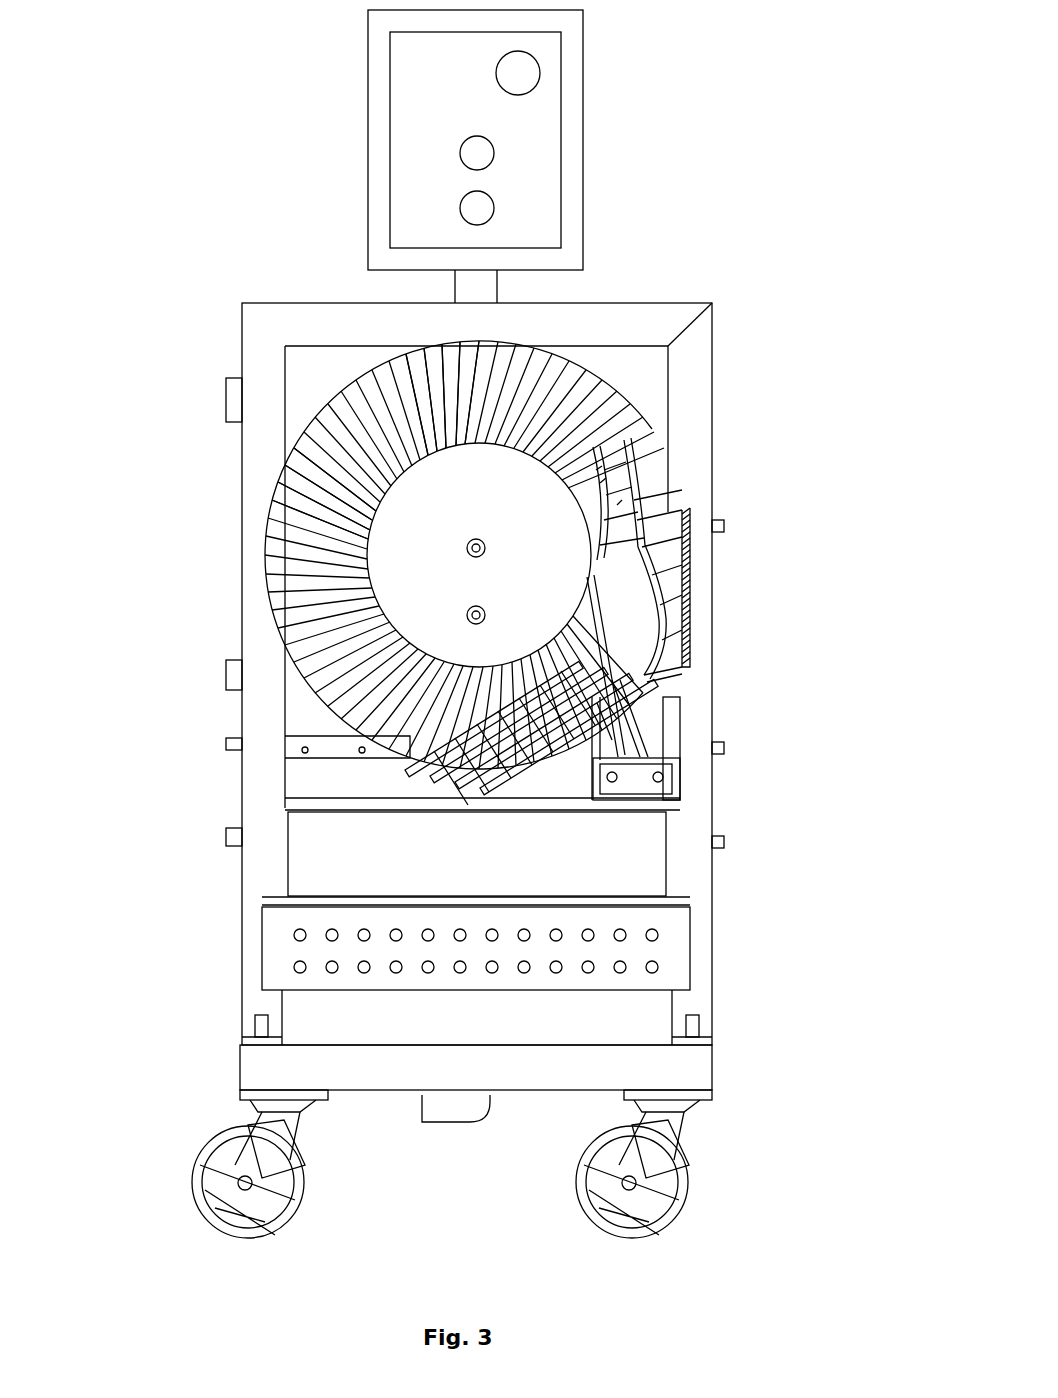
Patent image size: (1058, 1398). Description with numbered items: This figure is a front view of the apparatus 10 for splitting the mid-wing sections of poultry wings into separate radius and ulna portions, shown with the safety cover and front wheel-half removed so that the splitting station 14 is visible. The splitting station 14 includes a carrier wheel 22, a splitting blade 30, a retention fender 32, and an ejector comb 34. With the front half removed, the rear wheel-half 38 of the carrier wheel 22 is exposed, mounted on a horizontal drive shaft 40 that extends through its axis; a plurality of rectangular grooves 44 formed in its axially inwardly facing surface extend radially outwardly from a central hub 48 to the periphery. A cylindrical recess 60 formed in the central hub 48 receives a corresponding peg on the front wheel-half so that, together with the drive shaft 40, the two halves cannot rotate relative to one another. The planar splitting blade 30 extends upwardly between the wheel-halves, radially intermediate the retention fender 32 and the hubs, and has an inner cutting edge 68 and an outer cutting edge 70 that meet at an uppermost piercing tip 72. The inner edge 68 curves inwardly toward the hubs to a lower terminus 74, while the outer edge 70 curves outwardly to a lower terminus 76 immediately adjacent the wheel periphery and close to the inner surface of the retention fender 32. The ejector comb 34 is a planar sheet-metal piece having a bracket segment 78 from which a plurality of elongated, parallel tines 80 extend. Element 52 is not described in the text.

The apparatus 10 is at (841, 146).
The splitting station 14 is at (673, 490).
The carrier wheel 22 is at (282, 613).
The splitting blade 30 is at (622, 612).
The retention fender 32 is at (688, 580).
The ejector comb 34 is at (607, 693).
The rear wheel-half 38 is at (300, 512).
The horizontal drive shaft 40 is at (478, 544).
The rectangular grooves 44 is at (380, 403).
The central hub 48 is at (420, 570).
The inner vane ends 52 is at (295, 495).
The cylindrical recess 60 is at (467, 614).
The inner cutting edge 68 is at (600, 483).
The outer cutting edge 70 is at (617, 505).
The piercing tip 72 is at (596, 470).
The lower terminus 74 is at (590, 568).
The lower terminus 76 is at (647, 672).
The bracket segment 78 is at (597, 703).
The tines 80 is at (412, 757).